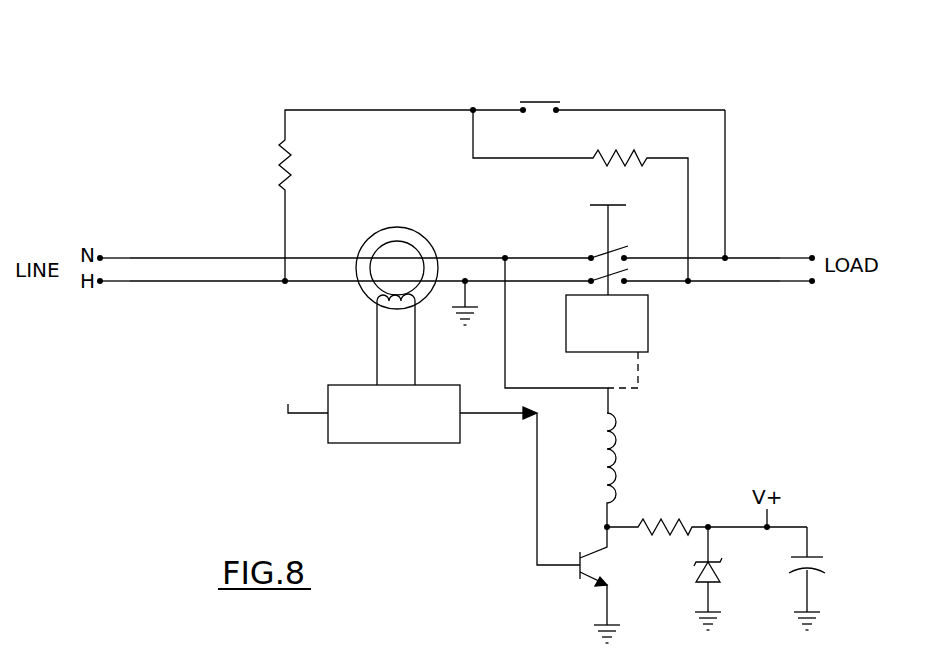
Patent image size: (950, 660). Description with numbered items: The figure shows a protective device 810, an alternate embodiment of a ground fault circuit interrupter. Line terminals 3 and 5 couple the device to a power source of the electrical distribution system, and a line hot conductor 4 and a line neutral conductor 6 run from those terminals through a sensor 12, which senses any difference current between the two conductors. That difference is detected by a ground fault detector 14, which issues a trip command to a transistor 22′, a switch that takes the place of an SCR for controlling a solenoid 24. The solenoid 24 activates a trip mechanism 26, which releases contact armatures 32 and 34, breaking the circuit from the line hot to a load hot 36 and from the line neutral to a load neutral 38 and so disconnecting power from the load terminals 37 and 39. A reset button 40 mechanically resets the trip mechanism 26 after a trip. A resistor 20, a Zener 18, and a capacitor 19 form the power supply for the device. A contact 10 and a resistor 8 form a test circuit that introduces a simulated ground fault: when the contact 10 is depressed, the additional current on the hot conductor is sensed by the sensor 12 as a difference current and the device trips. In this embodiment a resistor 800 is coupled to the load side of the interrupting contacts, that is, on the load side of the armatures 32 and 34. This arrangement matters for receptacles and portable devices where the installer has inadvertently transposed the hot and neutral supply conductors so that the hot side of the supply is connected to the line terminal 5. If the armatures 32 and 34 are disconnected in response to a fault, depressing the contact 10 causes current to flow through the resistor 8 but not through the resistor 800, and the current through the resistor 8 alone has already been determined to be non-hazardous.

The line terminal 3 is at (100, 256).
The conductor 4 is at (160, 256).
The line terminal 5 is at (100, 284).
The conductor 6 is at (160, 284).
The resistor 8 is at (285, 178).
The contact 10 is at (540, 102).
The sensor 12 is at (366, 292).
The ground fault detector 14 is at (328, 432).
The Zener 18 is at (722, 585).
The capacitor 19 is at (820, 552).
The resistor 20 is at (655, 522).
The transistor 22′ is at (605, 566).
The solenoid 24 is at (616, 464).
The trip mechanism 26 is at (648, 320).
The contact armature 32 is at (600, 252).
The contact armature 34 is at (600, 276).
The load hot 36 is at (783, 256).
The load terminal 37 is at (812, 256).
The load neutral 38 is at (786, 284).
The load terminal 39 is at (812, 284).
The reset button 40 is at (612, 206).
The resistor 800 is at (594, 158).
The protective device 810 is at (654, 88).